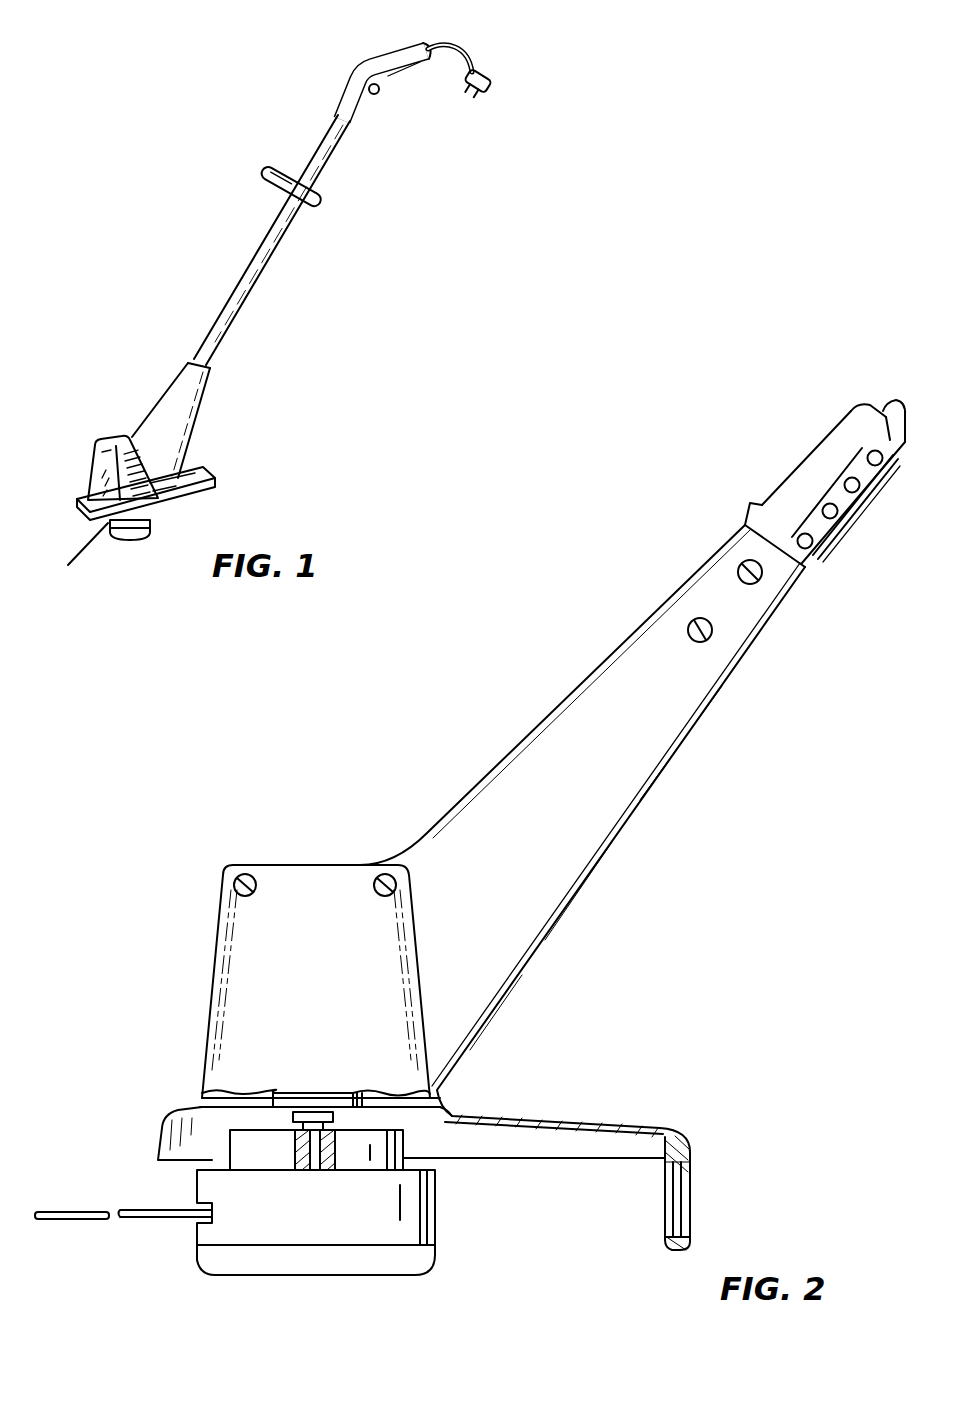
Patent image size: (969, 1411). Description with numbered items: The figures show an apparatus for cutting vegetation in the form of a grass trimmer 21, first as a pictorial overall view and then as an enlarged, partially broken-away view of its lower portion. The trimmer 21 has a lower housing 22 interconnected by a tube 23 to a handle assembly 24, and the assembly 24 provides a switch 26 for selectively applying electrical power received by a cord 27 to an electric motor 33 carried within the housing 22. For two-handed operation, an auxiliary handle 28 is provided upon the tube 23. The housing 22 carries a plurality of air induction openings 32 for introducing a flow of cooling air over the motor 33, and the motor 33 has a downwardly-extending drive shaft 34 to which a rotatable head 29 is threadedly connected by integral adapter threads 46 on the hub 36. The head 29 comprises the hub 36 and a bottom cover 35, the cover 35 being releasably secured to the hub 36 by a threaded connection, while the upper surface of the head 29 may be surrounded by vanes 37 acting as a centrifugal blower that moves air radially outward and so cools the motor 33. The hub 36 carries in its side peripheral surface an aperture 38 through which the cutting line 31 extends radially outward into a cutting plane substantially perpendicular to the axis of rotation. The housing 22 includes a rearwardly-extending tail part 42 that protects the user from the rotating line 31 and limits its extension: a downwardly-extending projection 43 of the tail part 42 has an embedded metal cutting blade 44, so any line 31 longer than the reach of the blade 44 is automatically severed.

In FIG. 1, the grass trimmer 21 is at (198, 255).
In FIG. 1, the lower housing 22 is at (148, 404).
In FIG. 2, the lower housing 22 is at (612, 652).
In FIG. 1, the tube 23 is at (236, 326).
In FIG. 2, the tube 23 is at (768, 510).
In FIG. 1, the handle assembly 24 is at (356, 72).
In FIG. 1, the switch 26 is at (380, 92).
In FIG. 1, the cord 27 is at (470, 44).
In FIG. 1, the auxiliary handle 28 is at (262, 178).
In FIG. 1, the head 29 is at (140, 544).
In FIG. 2, the head 29 is at (438, 1235).
In FIG. 1, the cutting line 31 is at (90, 554).
In FIG. 2, the cutting line 31 is at (76, 1210).
In FIG. 2, the air induction openings 32 is at (850, 524).
In FIG. 2, the motor 33 is at (288, 1092).
In FIG. 2, the drive shaft 34 is at (317, 1094).
In FIG. 2, the bottom cover 35 is at (426, 1277).
In FIG. 2, the hub 36 is at (440, 1206).
In FIG. 2, the vanes 37 is at (404, 1152).
In FIG. 2, the aperture 38 is at (196, 1224).
In FIG. 1, the tail part 42 is at (222, 478).
In FIG. 2, the tail part 42 is at (552, 1117).
In FIG. 2, the projection 43 is at (680, 1246).
In FIG. 2, the cutting blade 44 is at (688, 1214).
In FIG. 2, the adapter threads 46 is at (296, 1154).